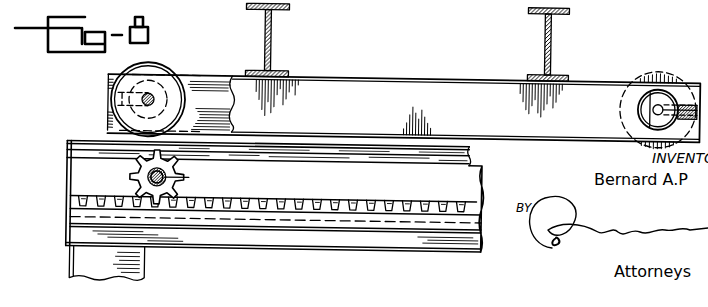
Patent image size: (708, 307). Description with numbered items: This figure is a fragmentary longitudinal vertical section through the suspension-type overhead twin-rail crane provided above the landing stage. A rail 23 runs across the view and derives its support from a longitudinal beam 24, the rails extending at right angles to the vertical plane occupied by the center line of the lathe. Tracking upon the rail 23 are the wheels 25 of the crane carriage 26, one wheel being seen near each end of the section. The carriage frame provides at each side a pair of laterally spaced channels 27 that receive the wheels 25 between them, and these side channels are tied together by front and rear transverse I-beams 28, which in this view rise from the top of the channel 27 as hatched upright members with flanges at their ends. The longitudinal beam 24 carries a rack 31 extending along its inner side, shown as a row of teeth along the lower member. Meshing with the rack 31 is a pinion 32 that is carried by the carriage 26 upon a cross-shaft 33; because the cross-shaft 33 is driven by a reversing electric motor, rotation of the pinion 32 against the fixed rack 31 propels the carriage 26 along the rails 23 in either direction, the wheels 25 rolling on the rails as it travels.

The rail 23 is at (82, 142).
The longitudinal beam 24 is at (485, 177).
The wheel 25 is at (164, 75).
The crane carriage 26 is at (395, 70).
The channel 27 is at (213, 82).
The transverse I-beam 28 is at (271, 39).
The rack 31 is at (398, 206).
The pinion 32 is at (132, 181).
The cross-shaft 33 is at (190, 180).